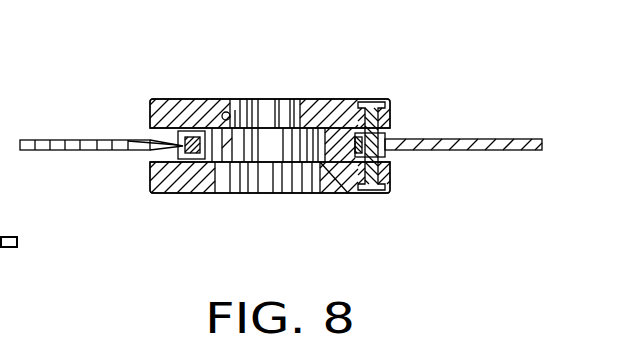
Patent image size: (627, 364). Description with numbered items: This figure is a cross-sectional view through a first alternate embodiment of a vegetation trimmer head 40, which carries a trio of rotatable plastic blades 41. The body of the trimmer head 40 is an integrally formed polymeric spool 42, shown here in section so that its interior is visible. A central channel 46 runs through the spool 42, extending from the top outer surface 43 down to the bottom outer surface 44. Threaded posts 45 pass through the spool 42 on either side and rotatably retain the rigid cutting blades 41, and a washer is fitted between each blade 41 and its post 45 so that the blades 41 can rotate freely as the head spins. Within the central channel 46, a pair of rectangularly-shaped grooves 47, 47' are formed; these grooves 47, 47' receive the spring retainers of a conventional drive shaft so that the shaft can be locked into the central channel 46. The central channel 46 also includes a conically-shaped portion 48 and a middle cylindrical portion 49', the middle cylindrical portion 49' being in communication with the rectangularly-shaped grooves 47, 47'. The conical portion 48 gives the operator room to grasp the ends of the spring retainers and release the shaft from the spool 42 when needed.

The vegetation trimmer head 40 is at (455, 105).
The rotatable plastic blades 41 is at (40, 138).
The spool 42 is at (352, 94).
The top outer surface 43 is at (193, 97).
The bottom outer surface 44 is at (172, 193).
The threaded posts 45 is at (276, 165).
The central channel 46 is at (284, 84).
The rectangularly-shaped groove 47 is at (242, 95).
The rectangularly-shaped groove 47' is at (328, 113).
The conically-shaped portion 48 is at (291, 193).
The middle cylindrical portion 49' is at (272, 189).